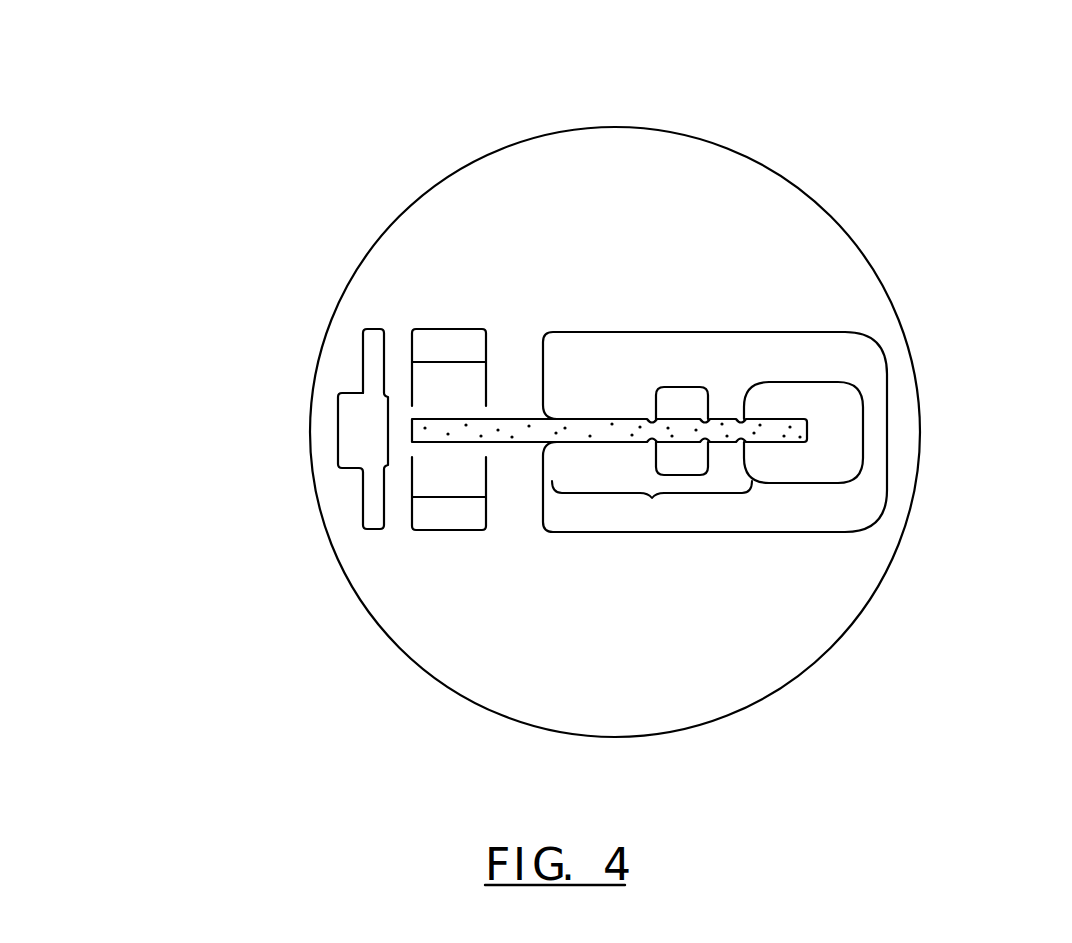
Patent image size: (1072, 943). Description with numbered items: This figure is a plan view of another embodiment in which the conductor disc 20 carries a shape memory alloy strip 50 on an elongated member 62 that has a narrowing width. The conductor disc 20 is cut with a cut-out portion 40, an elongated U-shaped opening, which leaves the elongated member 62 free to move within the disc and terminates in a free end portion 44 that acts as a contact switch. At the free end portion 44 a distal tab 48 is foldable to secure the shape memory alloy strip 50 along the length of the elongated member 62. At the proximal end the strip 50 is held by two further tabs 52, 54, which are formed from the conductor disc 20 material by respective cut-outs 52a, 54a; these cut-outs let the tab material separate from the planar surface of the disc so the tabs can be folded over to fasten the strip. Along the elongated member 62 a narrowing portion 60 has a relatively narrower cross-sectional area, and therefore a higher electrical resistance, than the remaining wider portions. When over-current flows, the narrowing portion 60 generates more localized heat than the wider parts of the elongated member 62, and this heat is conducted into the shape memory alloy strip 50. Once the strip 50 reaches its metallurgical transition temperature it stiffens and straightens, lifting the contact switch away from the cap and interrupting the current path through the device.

The conductor disc 20 is at (623, 205).
The cut-out portion 40 is at (805, 415).
The free end portion 44 is at (817, 398).
The distal tab 48 is at (833, 435).
The shape memory alloy strip 50 is at (532, 435).
The proximal tab 52 is at (319, 367).
The cut-out 52a is at (440, 343).
The proximal tab 54 is at (256, 390).
The cut-out 54a is at (375, 360).
The narrowing portion 60 is at (652, 505).
The elongated member 62 is at (808, 487).